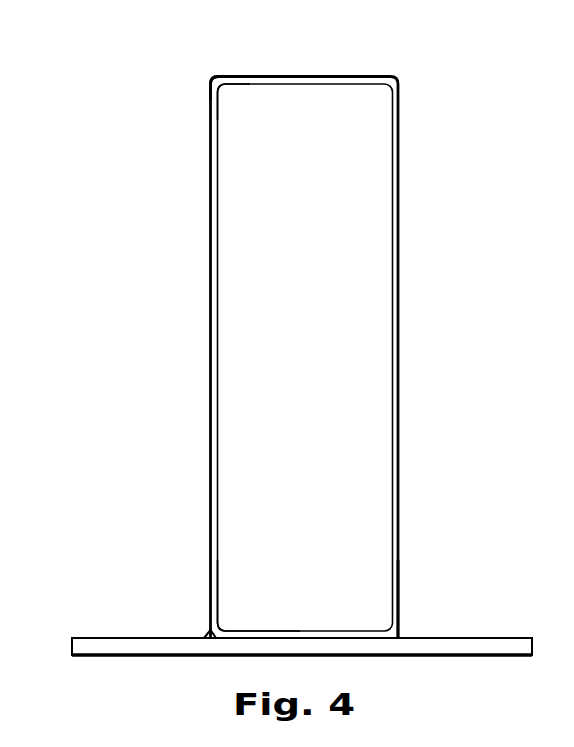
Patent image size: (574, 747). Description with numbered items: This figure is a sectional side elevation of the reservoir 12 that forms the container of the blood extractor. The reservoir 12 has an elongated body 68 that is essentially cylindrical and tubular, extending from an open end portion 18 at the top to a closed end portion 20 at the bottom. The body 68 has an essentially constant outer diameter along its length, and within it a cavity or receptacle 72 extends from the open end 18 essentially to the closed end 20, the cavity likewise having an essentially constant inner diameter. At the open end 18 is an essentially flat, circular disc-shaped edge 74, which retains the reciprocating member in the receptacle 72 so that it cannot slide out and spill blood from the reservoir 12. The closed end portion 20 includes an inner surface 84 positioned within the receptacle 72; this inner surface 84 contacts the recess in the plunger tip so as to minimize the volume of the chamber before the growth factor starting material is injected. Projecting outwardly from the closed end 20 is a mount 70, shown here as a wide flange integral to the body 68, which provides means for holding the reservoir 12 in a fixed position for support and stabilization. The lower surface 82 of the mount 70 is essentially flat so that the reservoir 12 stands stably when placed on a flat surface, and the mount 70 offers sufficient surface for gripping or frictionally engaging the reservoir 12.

The reservoir 12 is at (128, 163).
The open end portion 18 is at (352, 74).
The closed end portion 20 is at (398, 622).
The elongated body 68 is at (210, 303).
The mount 70 is at (211, 634).
The cavity or receptacle 72 is at (218, 162).
The disc-shaped edge 74 is at (211, 78).
The lower surface 82 is at (146, 656).
The inner surface 84 is at (288, 631).